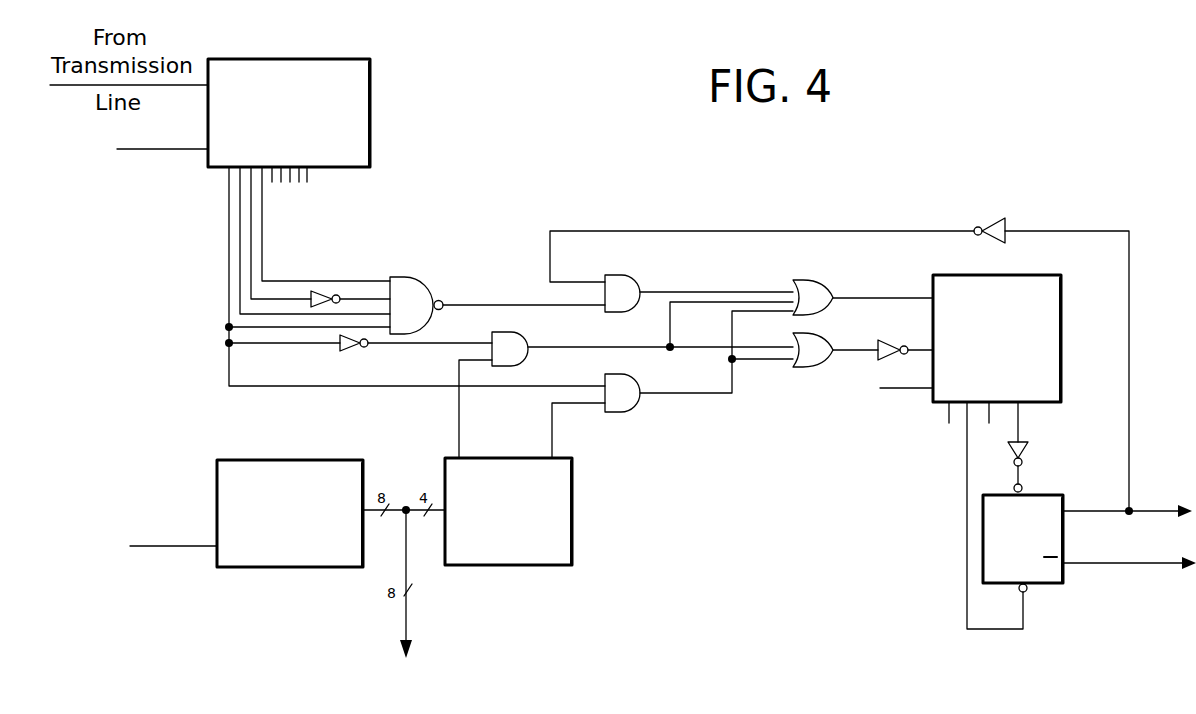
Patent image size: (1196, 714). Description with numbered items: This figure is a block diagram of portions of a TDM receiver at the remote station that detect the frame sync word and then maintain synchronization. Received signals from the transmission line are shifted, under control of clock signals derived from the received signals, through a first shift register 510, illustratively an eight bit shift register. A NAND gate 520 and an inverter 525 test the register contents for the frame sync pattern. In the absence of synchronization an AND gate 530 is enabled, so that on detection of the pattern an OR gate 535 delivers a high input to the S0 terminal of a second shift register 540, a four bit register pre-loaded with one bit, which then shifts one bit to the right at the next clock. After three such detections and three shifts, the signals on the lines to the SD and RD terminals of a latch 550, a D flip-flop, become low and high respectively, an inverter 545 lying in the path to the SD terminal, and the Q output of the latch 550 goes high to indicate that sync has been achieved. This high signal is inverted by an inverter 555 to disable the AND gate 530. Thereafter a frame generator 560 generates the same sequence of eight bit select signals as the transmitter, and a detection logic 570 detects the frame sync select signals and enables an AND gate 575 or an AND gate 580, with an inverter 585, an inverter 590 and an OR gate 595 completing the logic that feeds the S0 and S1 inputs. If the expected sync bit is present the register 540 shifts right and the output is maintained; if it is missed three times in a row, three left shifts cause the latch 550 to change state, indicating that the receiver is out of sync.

The first shift register 510 is at (368, 63).
The NAND gate 520 is at (415, 278).
The inverter 525 is at (320, 291).
The AND gate 530 is at (624, 278).
The OR gate 535 is at (808, 282).
The second shift register 540 is at (1044, 284).
The inverter 545 is at (1030, 450).
The latch 550 is at (1058, 496).
The inverter 555 is at (992, 220).
The frame generator 560 is at (366, 461).
The frame sync select signal detection logic 570 is at (570, 467).
The AND gate 575 is at (630, 392).
The AND gate 580 is at (518, 338).
The inverter 585 is at (354, 350).
The inverter 590 is at (812, 368).
The OR gate 595 is at (890, 341).